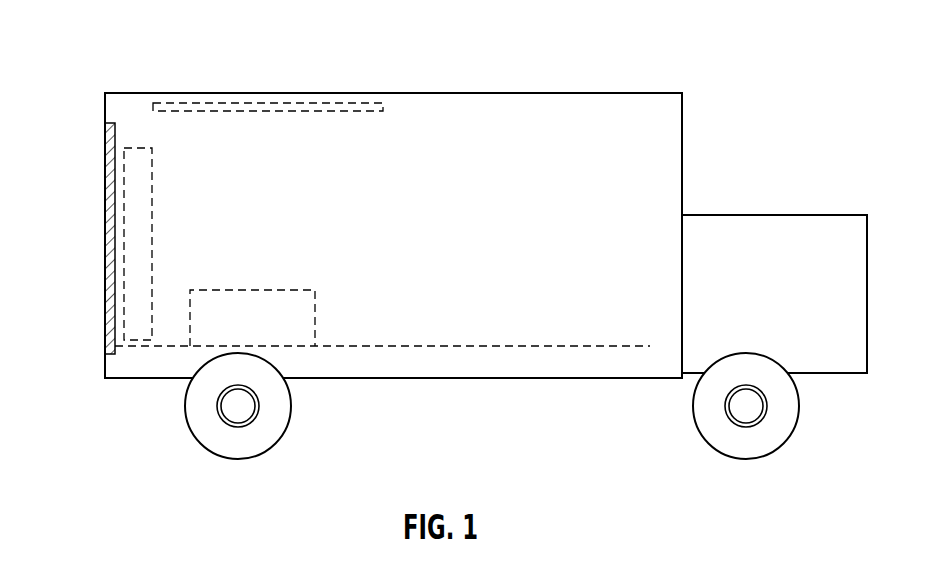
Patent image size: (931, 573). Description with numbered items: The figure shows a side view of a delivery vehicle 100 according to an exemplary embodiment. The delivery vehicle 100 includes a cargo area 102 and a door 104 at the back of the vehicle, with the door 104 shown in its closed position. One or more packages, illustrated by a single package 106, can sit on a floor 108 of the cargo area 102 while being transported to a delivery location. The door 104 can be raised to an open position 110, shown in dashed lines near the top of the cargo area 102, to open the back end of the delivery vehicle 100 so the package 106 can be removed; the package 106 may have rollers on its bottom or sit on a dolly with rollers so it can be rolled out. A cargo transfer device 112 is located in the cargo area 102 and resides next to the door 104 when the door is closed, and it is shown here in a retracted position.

The delivery vehicle 100 is at (110, 51).
The cargo area 102 is at (266, 132).
The door 104 is at (106, 263).
The package 106 is at (290, 290).
The floor 108 is at (489, 346).
The open position 110 is at (341, 103).
The cargo transfer device 112 is at (133, 203).